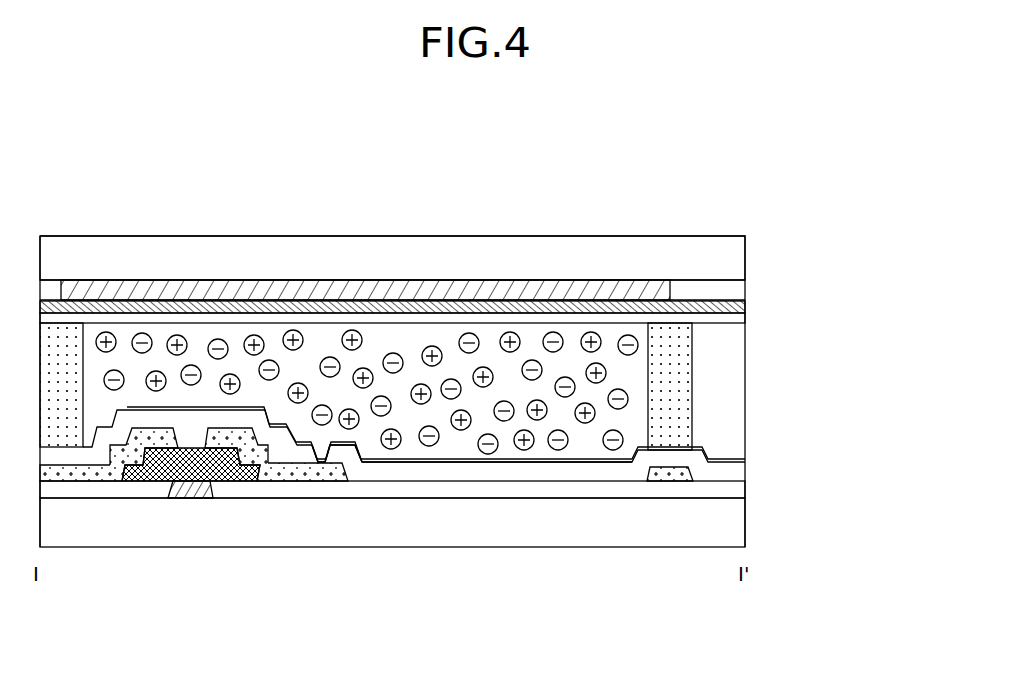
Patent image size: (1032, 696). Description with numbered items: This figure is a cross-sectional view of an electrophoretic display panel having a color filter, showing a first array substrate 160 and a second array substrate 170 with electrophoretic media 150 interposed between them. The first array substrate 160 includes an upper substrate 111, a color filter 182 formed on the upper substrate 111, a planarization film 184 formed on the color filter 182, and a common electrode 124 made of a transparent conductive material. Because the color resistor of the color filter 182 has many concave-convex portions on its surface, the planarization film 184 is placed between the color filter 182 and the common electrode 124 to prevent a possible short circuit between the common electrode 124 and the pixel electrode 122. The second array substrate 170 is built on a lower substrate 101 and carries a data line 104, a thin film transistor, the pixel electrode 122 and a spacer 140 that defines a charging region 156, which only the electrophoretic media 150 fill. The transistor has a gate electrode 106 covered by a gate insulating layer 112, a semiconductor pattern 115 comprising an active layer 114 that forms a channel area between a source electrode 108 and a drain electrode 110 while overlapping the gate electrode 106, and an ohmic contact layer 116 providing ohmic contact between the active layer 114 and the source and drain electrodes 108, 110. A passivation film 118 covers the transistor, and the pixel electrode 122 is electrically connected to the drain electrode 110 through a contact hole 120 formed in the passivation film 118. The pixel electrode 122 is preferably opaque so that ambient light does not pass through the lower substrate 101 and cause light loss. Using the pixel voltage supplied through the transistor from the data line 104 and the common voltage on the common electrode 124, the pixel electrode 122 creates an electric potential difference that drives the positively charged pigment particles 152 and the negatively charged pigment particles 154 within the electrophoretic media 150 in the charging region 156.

The lower substrate 101 is at (742, 525).
The data line 104 is at (75, 476).
The gate electrode 106 is at (177, 496).
The source electrode 108 is at (130, 456).
The drain electrode 110 is at (327, 478).
The upper substrate 111 is at (742, 258).
The gate insulating layer 112 is at (742, 490).
The active layer 114 is at (233, 476).
The semiconductor pattern 115 is at (250, 628).
The ohmic contact layer 116 is at (255, 478).
The passivation film 118 is at (742, 472).
The contact hole 120 is at (338, 456).
The pixel electrode 122 is at (500, 463).
The common electrode 124 is at (745, 320).
The spacer 140 is at (692, 384).
The electrophoretic media 150 is at (513, 190).
The positively charged pigment particles 152 is at (507, 333).
The negatively charged pigment particles 154 is at (463, 333).
The charging region 156 is at (646, 422).
The first array substrate 160 is at (847, 307).
The second array substrate 170 is at (848, 512).
The color filter 182 is at (336, 290).
The planarization film 184 is at (747, 311).